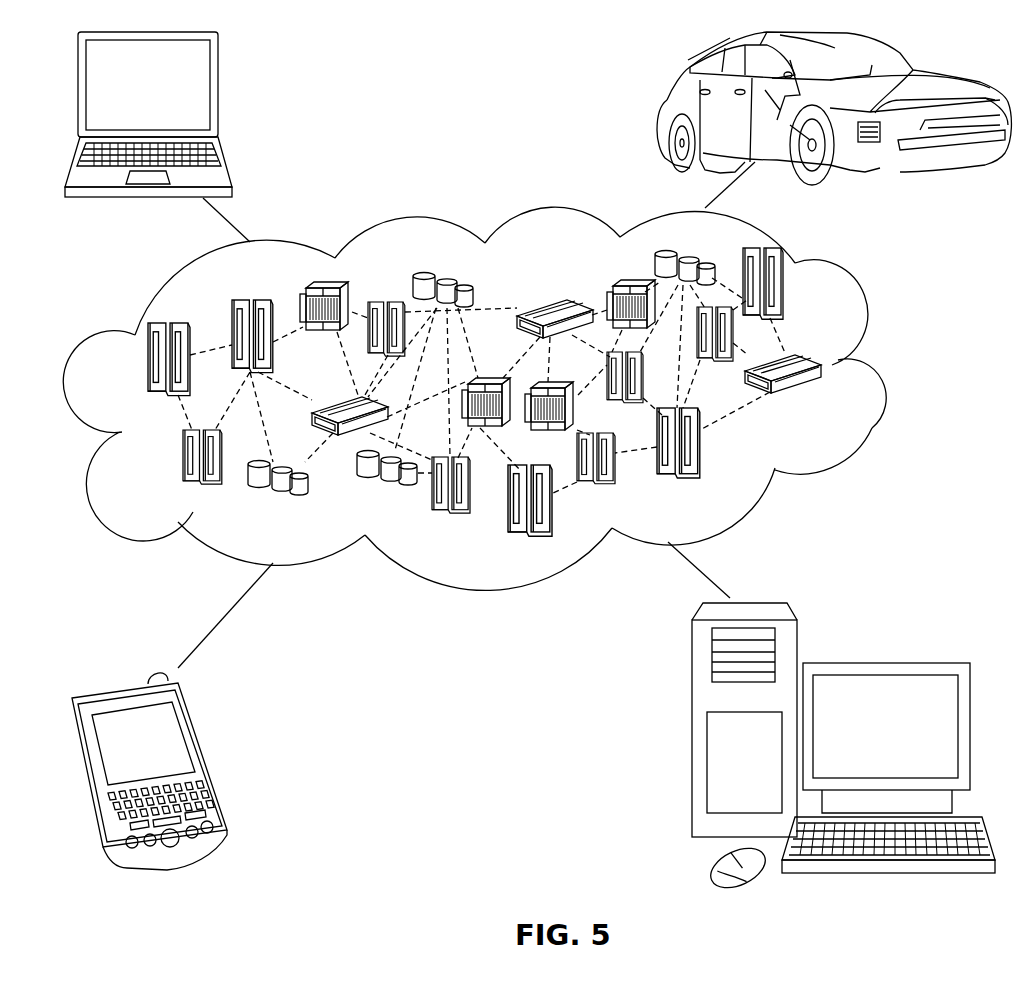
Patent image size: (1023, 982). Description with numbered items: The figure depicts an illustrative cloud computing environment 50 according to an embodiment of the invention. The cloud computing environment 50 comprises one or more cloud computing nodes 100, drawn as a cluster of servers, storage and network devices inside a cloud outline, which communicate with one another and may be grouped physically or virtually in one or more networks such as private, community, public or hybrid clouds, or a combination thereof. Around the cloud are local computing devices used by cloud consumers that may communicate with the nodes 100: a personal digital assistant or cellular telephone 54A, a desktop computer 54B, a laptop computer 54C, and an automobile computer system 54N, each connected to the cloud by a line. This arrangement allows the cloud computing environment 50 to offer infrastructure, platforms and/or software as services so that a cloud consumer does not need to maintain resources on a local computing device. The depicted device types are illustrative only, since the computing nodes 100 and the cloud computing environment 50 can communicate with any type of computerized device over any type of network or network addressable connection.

The cloud computing environment 50 is at (884, 370).
The cloud computing nodes 100 is at (833, 402).
The personal digital assistant (PDA) or cellular telephone 54A is at (205, 758).
The desktop computer 54B is at (882, 662).
The laptop computer 54C is at (220, 92).
The automobile computer system 54N is at (662, 108).